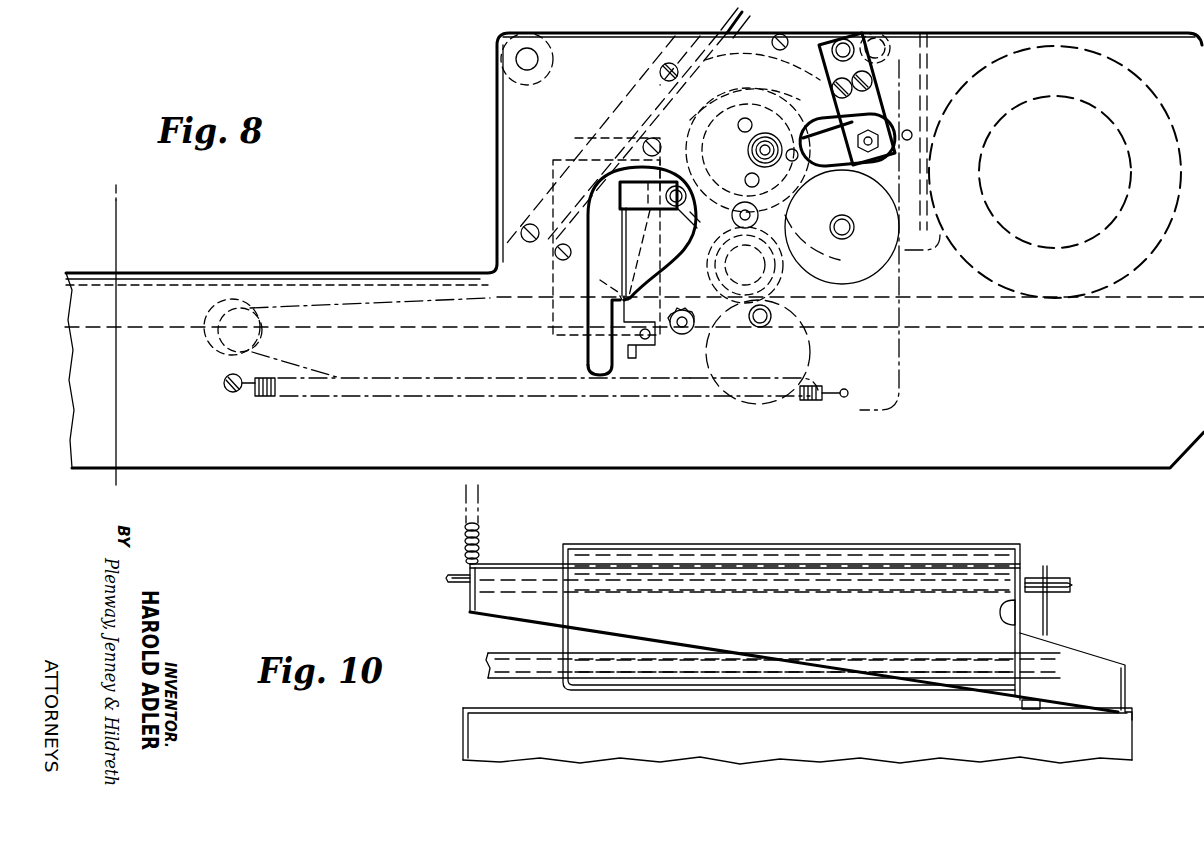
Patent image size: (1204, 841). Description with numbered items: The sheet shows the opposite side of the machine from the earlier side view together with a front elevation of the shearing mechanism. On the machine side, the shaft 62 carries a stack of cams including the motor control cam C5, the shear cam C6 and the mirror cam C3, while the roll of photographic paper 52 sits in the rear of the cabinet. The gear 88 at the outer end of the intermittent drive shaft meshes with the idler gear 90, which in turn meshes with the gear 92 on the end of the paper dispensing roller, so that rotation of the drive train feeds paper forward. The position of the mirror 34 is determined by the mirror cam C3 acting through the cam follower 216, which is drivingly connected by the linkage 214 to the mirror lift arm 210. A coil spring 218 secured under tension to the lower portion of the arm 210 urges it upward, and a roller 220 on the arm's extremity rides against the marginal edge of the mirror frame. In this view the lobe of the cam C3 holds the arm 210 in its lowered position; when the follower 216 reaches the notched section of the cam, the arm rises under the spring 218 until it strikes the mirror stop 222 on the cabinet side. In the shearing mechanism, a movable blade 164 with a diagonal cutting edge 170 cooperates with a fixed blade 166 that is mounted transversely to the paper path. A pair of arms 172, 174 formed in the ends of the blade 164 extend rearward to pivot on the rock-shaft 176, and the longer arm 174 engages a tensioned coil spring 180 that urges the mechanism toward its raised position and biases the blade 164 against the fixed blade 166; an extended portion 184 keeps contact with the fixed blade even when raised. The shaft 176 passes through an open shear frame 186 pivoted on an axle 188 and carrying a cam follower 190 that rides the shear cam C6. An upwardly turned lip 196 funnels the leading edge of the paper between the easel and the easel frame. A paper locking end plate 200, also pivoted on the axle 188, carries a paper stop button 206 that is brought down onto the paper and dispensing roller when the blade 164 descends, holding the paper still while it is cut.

In FIG. 8, the mirror stop 222 is at (554, 59).
In FIG. 8, the mirror 34 is at (618, 108).
In FIG. 8, the roll of photographic paper 52 is at (1132, 72).
In FIG. 8, the shaft 62 is at (772, 165).
In FIG. 8, the motor control cam C5 is at (772, 80).
In FIG. 8, the shear cam C6 is at (792, 69).
In FIG. 8, the mirror cam C3 is at (810, 83).
In FIG. 8, the linkage 214 is at (852, 75).
In FIG. 8, the cam follower 216 is at (865, 170).
In FIG. 8, the gear 88 is at (900, 230).
In FIG. 8, the cam follower 190 is at (728, 230).
In FIG. 8, the movable blade 164 is at (612, 237).
In FIG. 10, the movable blade 164 is at (761, 626).
In FIG. 8, the arm 172 is at (648, 218).
In FIG. 10, the arm 172 is at (1030, 570).
In FIG. 8, the rock-shaft 176 is at (672, 216).
In FIG. 10, the rock-shaft 176 is at (452, 575).
In FIG. 8, the shear frame 186 is at (690, 228).
In FIG. 10, the shear frame 186 is at (1018, 543).
In FIG. 8, the lip 196 is at (617, 275).
In FIG. 8, the gear 92 is at (678, 336).
In FIG. 8, the idler gear 90 is at (812, 348).
In FIG. 8, the roller 220 is at (212, 343).
In FIG. 8, the mirror lift arm 210 is at (306, 302).
In FIG. 8, the coil spring 218 is at (265, 400).
In FIG. 10, the fixed blade 166 is at (768, 749).
In FIG. 10, the diagonal cutting edge 170 is at (500, 622).
In FIG. 10, the arm 174 is at (466, 606).
In FIG. 10, the coil spring 180 is at (464, 544).
In FIG. 10, the axle 188 is at (488, 658).
In FIG. 10, the extended portion 184 is at (1128, 690).
In FIG. 10, the end plate 200 is at (1050, 616).
In FIG. 10, the paper stop button 206 is at (1030, 712).